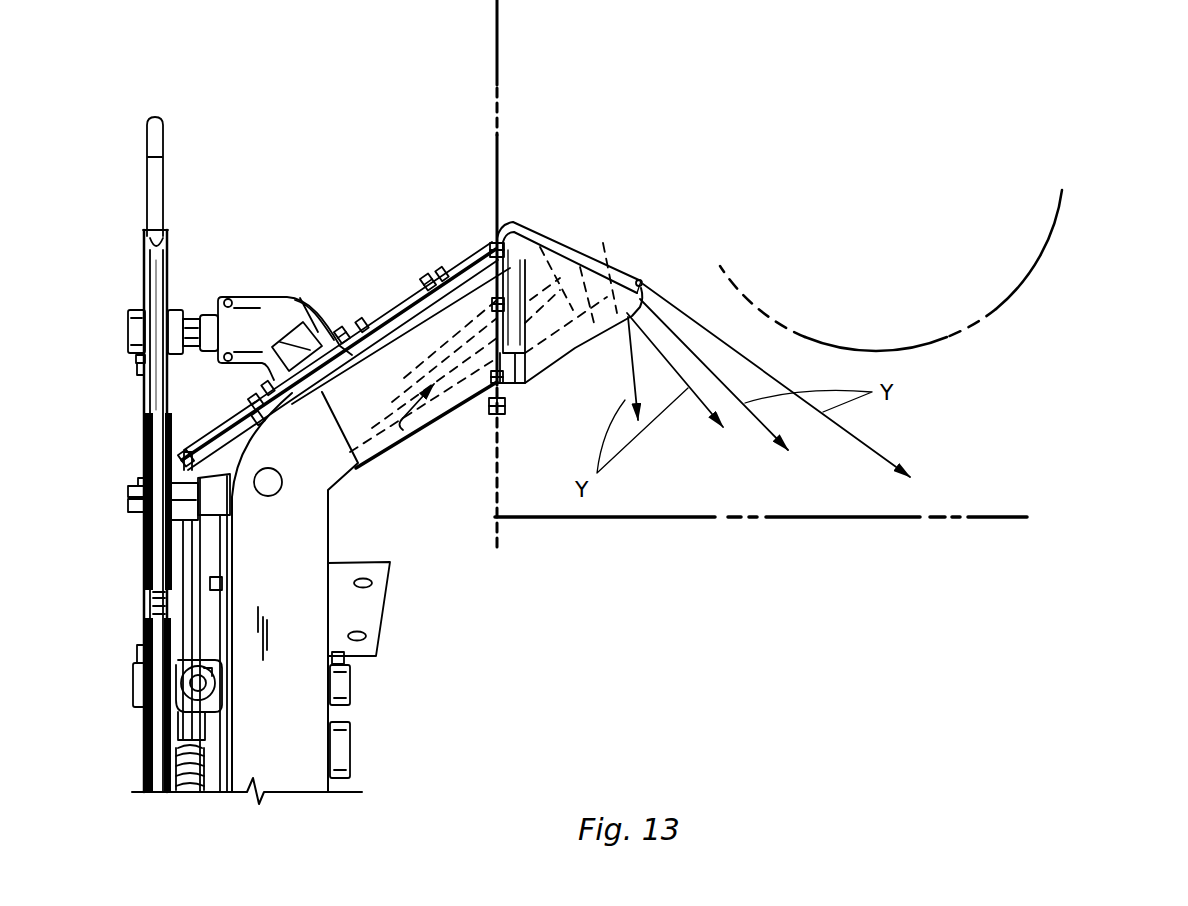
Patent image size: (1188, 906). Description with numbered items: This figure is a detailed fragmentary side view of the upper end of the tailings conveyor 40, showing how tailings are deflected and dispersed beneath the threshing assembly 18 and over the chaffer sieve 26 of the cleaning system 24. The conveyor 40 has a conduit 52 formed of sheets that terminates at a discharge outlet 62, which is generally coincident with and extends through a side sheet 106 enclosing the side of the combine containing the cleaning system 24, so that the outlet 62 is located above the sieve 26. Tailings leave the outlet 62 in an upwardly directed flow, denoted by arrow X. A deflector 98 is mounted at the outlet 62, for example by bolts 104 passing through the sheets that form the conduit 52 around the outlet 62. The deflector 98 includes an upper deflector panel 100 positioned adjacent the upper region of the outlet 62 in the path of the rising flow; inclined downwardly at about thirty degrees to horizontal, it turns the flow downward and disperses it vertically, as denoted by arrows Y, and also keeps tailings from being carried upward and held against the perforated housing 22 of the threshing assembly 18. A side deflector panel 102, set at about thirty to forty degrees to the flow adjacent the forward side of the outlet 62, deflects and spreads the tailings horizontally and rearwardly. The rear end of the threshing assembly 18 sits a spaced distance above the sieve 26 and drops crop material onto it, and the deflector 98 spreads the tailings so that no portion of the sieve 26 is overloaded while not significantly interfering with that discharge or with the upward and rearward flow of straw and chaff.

The threshing assembly 18 is at (1082, 316).
The perforated housing 22 is at (1000, 308).
The cleaning system 24 is at (1082, 530).
The chaffer sieve 26 is at (1007, 517).
The conveyor 40 is at (498, 676).
The conduit 52 is at (393, 451).
The discharge outlet 62 is at (503, 393).
The deflector 98 is at (597, 212).
The upper deflector panel 100 is at (633, 270).
The side deflector panel 102 is at (560, 362).
The bolts 104 is at (503, 246).
The side sheet 106 is at (497, 148).